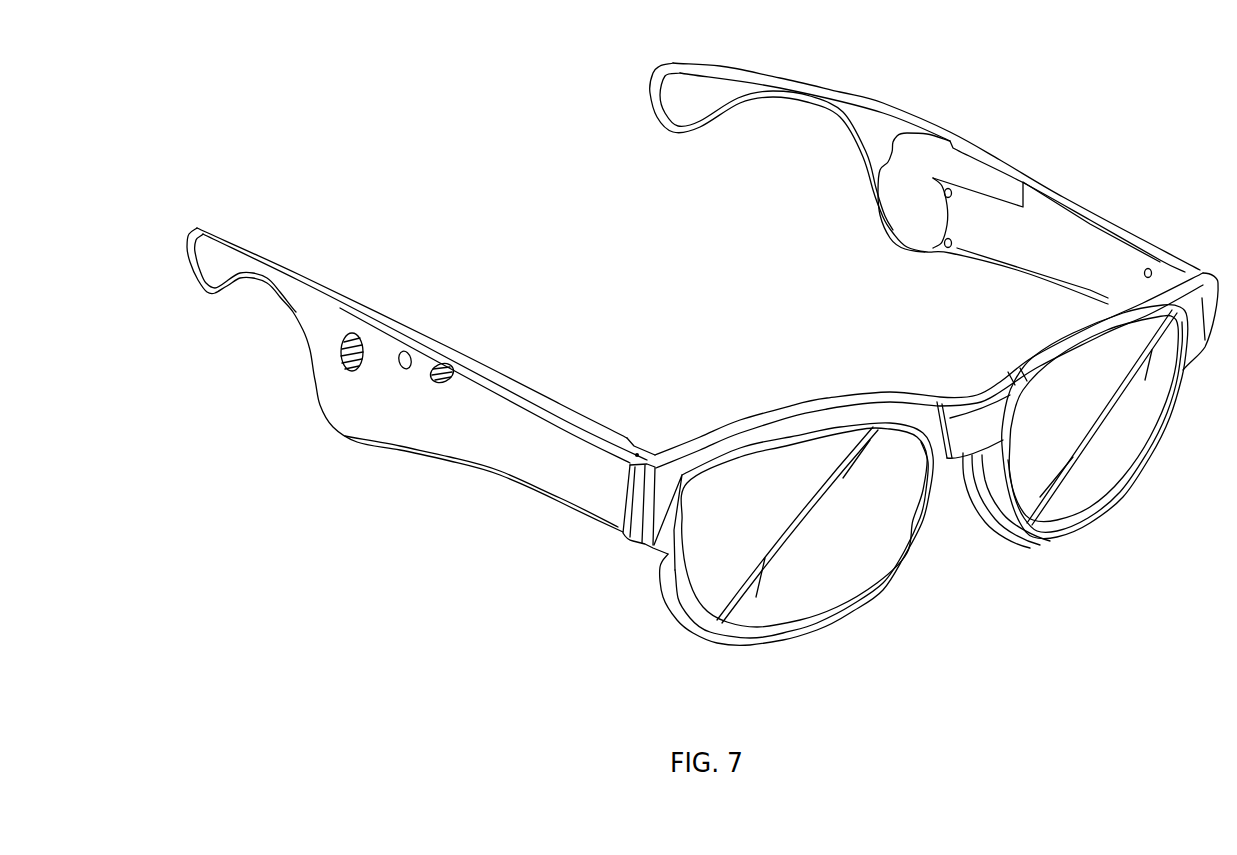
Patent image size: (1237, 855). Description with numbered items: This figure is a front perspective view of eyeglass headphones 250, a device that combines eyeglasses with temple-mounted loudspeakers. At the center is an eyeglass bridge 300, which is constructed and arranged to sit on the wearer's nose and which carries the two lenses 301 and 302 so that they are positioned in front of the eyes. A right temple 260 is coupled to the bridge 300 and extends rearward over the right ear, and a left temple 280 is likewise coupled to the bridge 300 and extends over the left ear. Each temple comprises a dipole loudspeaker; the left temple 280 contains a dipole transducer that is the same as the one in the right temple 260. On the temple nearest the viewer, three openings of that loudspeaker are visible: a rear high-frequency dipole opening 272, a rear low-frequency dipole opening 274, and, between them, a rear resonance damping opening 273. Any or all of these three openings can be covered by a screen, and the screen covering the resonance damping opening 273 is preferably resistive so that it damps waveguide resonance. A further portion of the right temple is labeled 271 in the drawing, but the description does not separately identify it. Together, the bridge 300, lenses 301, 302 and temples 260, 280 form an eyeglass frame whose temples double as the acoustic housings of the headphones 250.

The eyeglass headphones 250 is at (605, 603).
The right temple 260 is at (533, 390).
The temple housing 271 is at (332, 417).
The rear high-frequency dipole opening 272 is at (355, 333).
The rear resonance damping opening 273 is at (412, 355).
The rear low-frequency dipole opening 274 is at (443, 367).
The left temple 280 is at (883, 103).
The eyeglass bridge 300 is at (910, 398).
The lens 301 is at (847, 580).
The lens 302 is at (1060, 503).